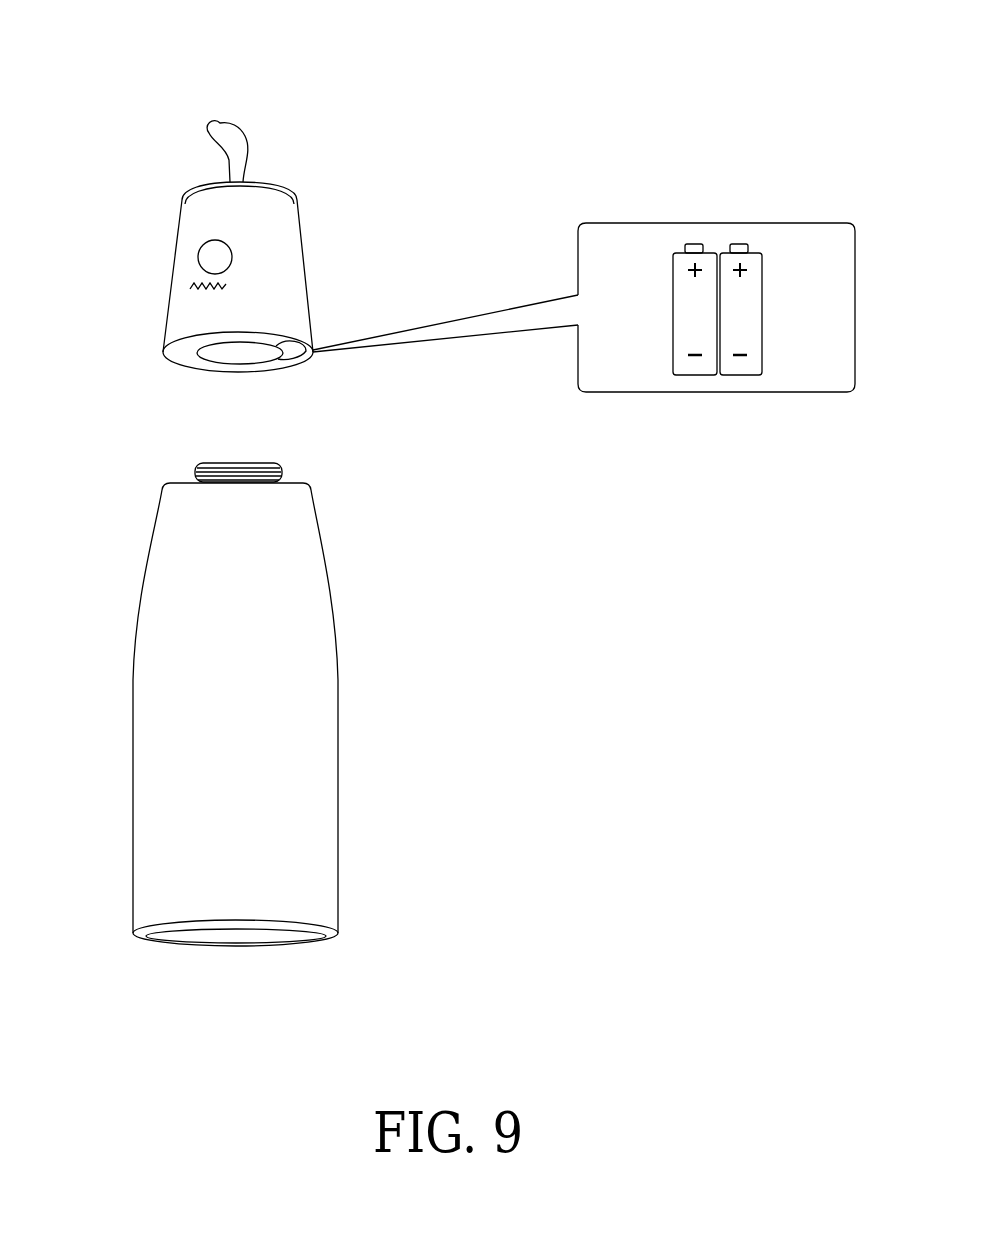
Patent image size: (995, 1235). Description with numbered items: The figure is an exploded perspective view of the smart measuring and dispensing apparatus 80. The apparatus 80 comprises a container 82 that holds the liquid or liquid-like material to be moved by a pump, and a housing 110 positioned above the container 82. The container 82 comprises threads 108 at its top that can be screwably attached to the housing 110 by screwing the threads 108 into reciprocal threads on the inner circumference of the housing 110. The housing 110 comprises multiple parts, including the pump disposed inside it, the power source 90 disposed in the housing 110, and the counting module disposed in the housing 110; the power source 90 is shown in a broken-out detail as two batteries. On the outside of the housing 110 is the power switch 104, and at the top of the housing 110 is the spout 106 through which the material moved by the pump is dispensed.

The apparatus 80 is at (232, 37).
The container 82 is at (182, 788).
The power source 90 is at (725, 368).
The power switch 104 is at (218, 259).
The spout 106 is at (240, 138).
The threads 108 is at (198, 478).
The housing 110 is at (197, 222).